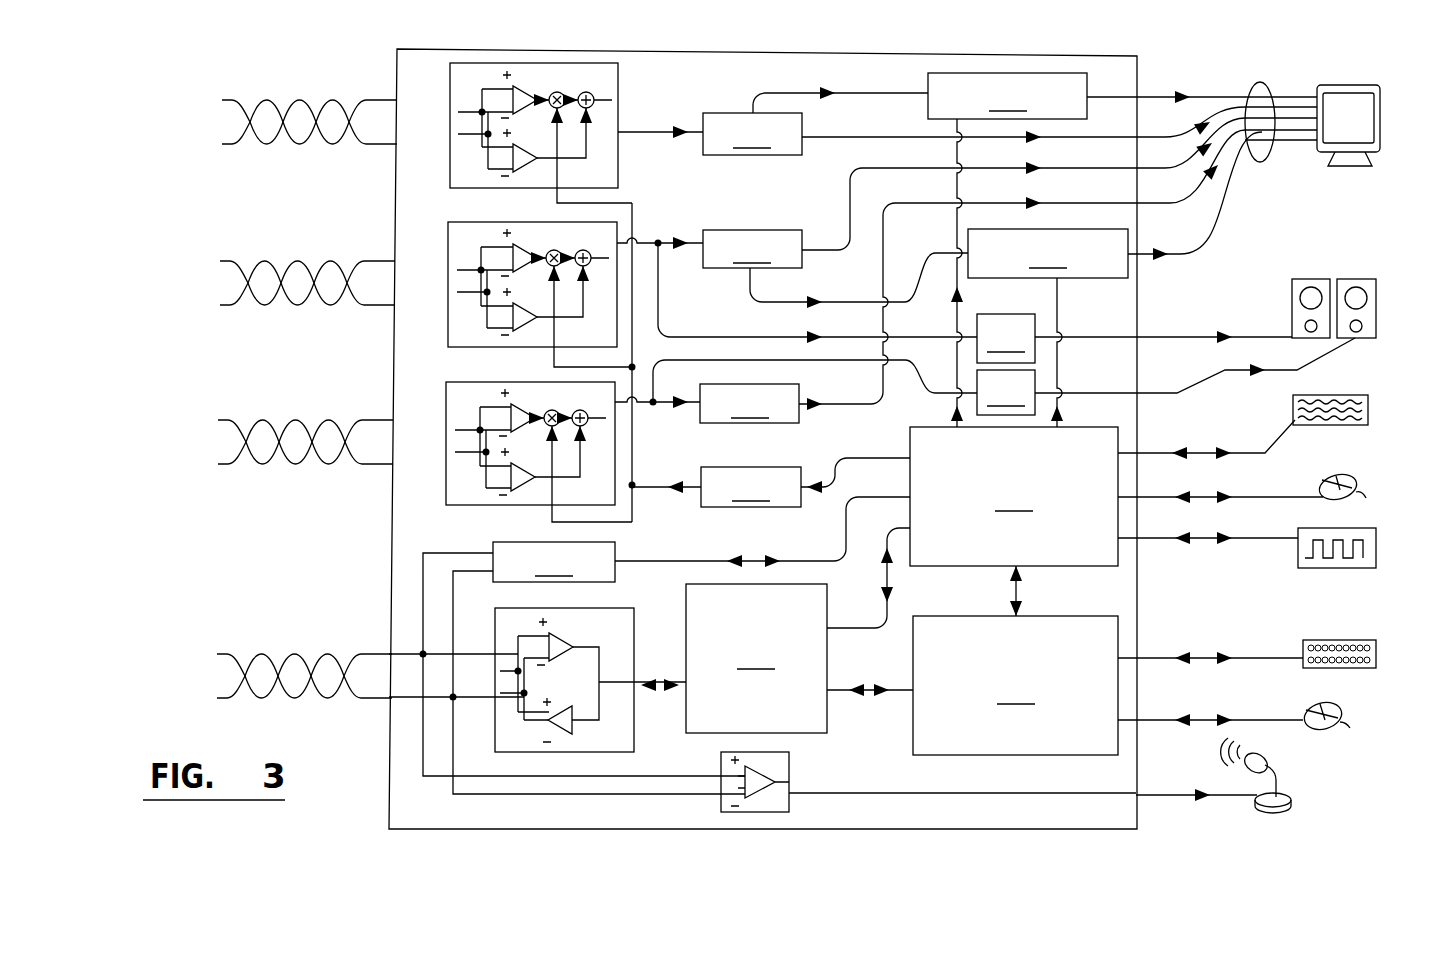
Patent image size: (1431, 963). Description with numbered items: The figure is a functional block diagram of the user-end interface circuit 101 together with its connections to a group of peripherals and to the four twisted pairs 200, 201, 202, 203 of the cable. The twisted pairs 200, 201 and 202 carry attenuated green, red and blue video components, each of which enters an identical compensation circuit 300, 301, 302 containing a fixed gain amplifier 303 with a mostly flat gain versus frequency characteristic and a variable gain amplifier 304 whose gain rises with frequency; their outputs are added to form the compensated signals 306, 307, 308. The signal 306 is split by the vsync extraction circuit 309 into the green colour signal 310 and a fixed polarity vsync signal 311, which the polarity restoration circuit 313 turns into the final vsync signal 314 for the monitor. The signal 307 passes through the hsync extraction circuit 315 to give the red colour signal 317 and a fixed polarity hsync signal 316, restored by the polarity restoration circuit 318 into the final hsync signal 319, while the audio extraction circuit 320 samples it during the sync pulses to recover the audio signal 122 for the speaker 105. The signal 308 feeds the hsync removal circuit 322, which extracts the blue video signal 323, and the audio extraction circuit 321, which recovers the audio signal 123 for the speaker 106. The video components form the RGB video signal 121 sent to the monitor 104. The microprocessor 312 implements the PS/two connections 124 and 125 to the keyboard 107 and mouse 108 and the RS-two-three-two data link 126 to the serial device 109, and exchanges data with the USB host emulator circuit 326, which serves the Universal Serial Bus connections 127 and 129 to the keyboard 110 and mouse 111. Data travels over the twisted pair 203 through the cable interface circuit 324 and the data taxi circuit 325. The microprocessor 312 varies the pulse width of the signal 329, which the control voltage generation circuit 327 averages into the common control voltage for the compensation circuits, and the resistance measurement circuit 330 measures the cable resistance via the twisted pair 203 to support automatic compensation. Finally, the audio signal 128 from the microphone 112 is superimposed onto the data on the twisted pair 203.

The user-end interface circuit 101 is at (389, 557).
The monitor 104 is at (1388, 85).
The speaker 105 is at (1308, 279).
The speaker 106 is at (1356, 279).
The keyboard 107 is at (1350, 395).
The mouse 108 is at (1362, 486).
The RS232 device 109 is at (1360, 568).
The keyboard 110 is at (1350, 668).
The mouse 111 is at (1340, 733).
The microphone 112 is at (1285, 815).
The RGB video signal 121 is at (1280, 85).
The audio signal 122 is at (1178, 332).
The audio signal 123 is at (1228, 372).
The PS/2 connection 124 is at (1248, 445).
The PS/2 connection 125 is at (1160, 500).
The RS232 data link 126 is at (1268, 540).
The Universal Serial Bus 127 is at (1260, 657).
The audio signal 128 is at (1175, 800).
The Universal Serial Bus 129 is at (1262, 719).
The twisted pair 200 is at (248, 123).
The twisted pair 201 is at (247, 283).
The twisted pair 202 is at (245, 441).
The twisted pair 203 is at (240, 676).
The compensation circuit 300 is at (570, 132).
The compensation circuit 301 is at (446, 328).
The compensation circuit 302 is at (446, 485).
The fixed gain amplifier 303 is at (543, 150).
The variable gain amplifier 304 is at (518, 92).
The compensated signal 306 is at (638, 134).
The compensated signal 307 is at (658, 244).
The compensated signal 308 is at (690, 333).
The vsync extraction circuit 309 is at (752, 134).
The green colour signal 310 is at (877, 135).
The fixed polarity vsync signal 311 is at (890, 91).
The microprocessor 312 is at (1014, 496).
The polarity restoration circuit 313 is at (1007, 96).
The final vsync signal 314 is at (1157, 93).
The hsync extraction circuit 315 is at (752, 249).
The fixed polarity hsync signal 316 is at (838, 302).
The red colour signal 317 is at (848, 207).
The polarity restoration circuit 318 is at (1048, 253).
The final hsync signal 319 is at (1225, 215).
The audio extraction circuit 320 is at (1006, 338).
The audio extraction circuit 321 is at (1006, 392).
The hsync removal circuit 322 is at (749, 403).
The blue video signal 323 is at (880, 386).
The cable interface circuit 324 is at (636, 624).
The data taxi circuit 325 is at (756, 658).
The USB host emulator circuit 326 is at (789, 772).
The control voltage generation circuit 327 is at (716, 487).
The pulse width signal 329 is at (880, 457).
The resistance measurement circuit 330 is at (666, 645).